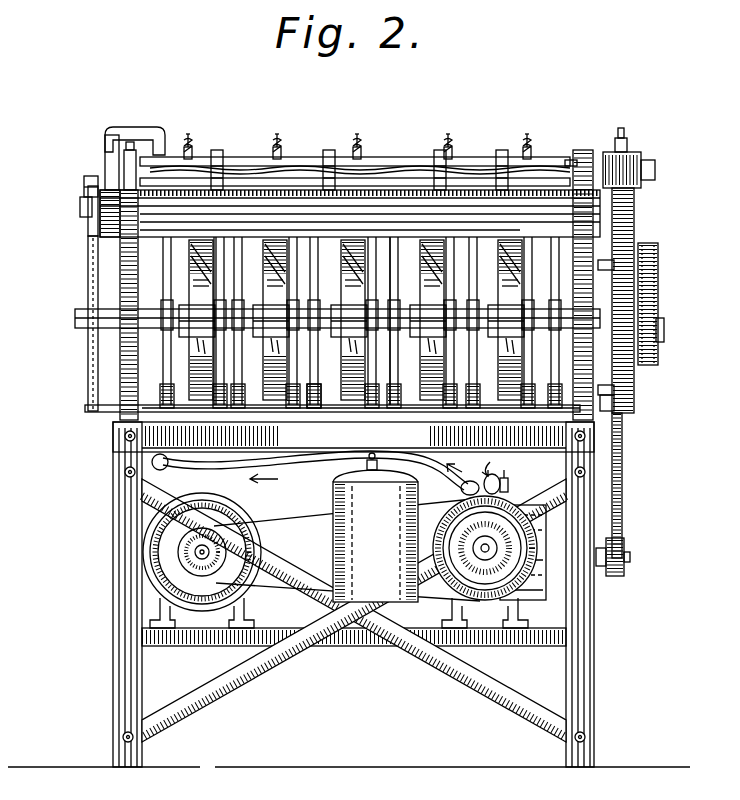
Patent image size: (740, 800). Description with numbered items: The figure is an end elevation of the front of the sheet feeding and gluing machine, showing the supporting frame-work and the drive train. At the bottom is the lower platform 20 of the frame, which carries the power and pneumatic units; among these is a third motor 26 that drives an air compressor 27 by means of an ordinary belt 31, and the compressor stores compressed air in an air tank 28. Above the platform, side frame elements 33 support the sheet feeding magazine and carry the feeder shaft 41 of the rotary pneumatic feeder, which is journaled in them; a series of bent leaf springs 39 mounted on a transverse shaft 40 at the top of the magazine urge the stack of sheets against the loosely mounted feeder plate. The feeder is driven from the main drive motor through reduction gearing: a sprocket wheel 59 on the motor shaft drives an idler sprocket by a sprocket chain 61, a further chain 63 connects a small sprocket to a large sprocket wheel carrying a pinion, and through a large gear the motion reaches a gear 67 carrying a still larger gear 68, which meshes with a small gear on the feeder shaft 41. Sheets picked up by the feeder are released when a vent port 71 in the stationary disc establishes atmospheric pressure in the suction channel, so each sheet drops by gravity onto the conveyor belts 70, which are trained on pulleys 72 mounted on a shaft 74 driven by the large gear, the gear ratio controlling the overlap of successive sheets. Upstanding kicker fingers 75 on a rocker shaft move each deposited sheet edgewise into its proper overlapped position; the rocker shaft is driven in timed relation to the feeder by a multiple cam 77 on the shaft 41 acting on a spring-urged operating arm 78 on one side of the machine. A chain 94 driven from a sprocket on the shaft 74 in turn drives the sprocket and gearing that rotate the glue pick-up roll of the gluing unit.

The lower platform 20 is at (340, 638).
The third motor 26 is at (150, 552).
The air compressor 27 is at (510, 556).
The air tank 28 is at (348, 562).
The belt 31 is at (292, 514).
The side frame elements 33 is at (120, 256).
The bent leaf springs 39 is at (348, 176).
The transverse shaft 40 is at (304, 160).
The shaft 41 is at (78, 206).
The sprocket wheel 59 is at (626, 560).
The sprocket chain 61 is at (624, 466).
The chain 63 is at (622, 405).
The gear 67 is at (636, 212).
The gear 68 is at (606, 168).
The conveyor belts 70 is at (282, 278).
The vent opening or port 71 is at (403, 300).
The pulleys 72 is at (220, 390).
The shaft 74 is at (280, 408).
The kicker fingers or arms 75 is at (323, 386).
The multiple cam 77 is at (95, 224).
The operating arm 78 is at (88, 282).
The chain 94 is at (650, 288).